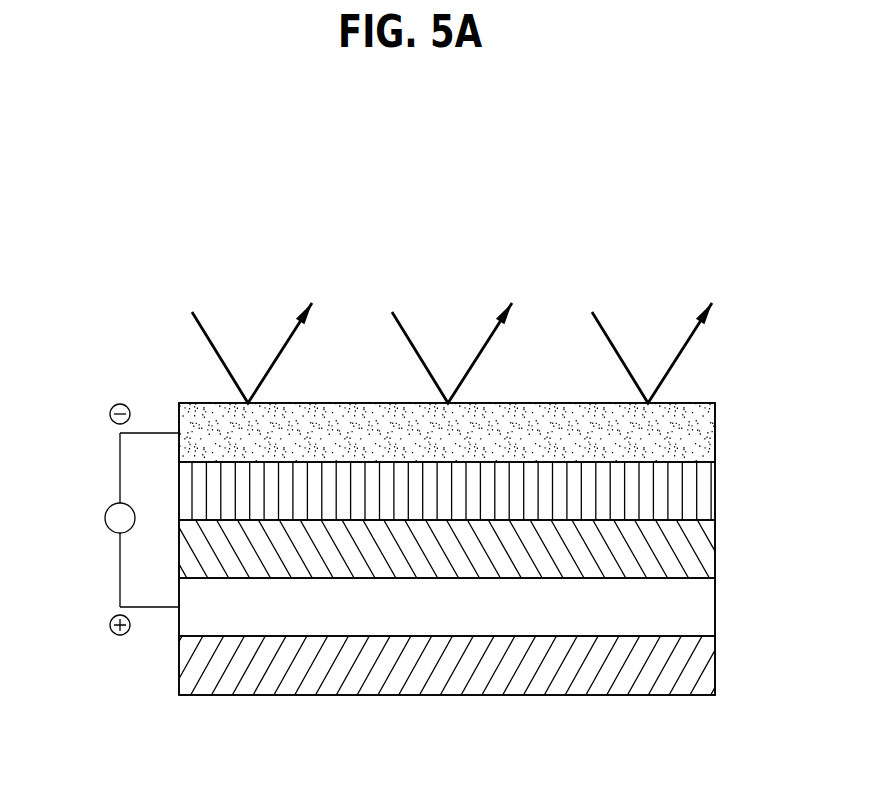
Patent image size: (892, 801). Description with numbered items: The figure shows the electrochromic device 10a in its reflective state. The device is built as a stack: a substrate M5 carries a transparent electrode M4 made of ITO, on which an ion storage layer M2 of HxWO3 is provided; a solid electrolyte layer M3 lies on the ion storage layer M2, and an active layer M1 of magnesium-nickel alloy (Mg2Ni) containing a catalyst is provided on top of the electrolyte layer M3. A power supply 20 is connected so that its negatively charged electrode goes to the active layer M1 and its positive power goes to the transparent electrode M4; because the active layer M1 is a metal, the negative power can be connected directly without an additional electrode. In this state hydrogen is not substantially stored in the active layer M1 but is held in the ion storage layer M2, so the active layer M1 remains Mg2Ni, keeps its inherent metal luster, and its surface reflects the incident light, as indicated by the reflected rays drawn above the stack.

The electrochromic device 10a is at (185, 216).
The power supply 20 is at (105, 536).
The active layer M1 is at (715, 430).
The ion storage layer M2 is at (715, 548).
The electrolyte layer M3 is at (715, 492).
The transparent electrode M4 is at (715, 608).
The substrate M5 is at (715, 666).